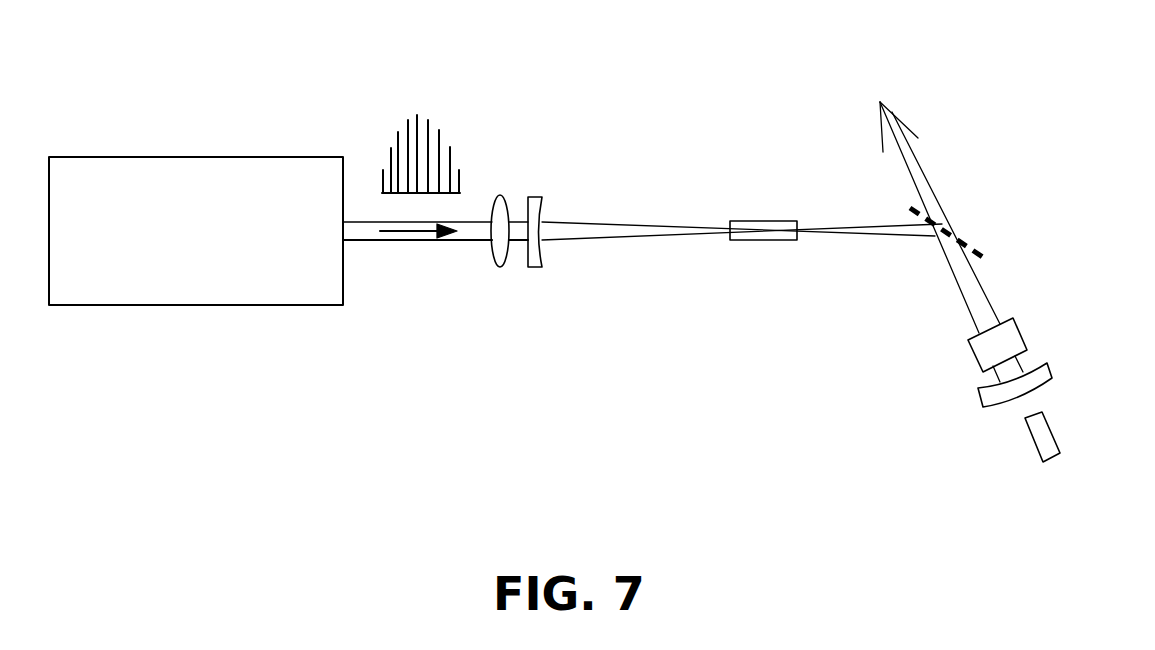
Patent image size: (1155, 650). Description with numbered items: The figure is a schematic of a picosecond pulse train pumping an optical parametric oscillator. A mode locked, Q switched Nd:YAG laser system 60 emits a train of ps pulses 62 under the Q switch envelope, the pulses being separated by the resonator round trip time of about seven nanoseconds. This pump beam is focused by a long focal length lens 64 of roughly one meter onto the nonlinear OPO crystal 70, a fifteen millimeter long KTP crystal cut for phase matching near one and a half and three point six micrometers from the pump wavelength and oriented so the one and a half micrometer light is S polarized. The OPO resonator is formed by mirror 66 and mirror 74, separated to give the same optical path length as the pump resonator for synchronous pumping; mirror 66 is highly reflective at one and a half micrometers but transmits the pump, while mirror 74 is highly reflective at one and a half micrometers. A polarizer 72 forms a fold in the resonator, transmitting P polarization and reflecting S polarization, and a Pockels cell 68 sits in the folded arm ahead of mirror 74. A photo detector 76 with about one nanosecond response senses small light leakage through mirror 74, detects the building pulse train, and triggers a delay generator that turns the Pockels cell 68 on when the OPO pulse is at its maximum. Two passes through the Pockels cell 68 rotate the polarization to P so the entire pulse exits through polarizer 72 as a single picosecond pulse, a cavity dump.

The Nd:YAG laser system 60 is at (228, 157).
The train of ps pulses 62 is at (437, 241).
The long focal length lens 64 is at (502, 193).
The mirror 66 is at (542, 268).
The Pockels cell 68 is at (1022, 333).
The OPO crystal 70 is at (765, 221).
The polarizer 72 is at (985, 252).
The mirror 74 is at (978, 395).
The photo detector 76 is at (1032, 447).